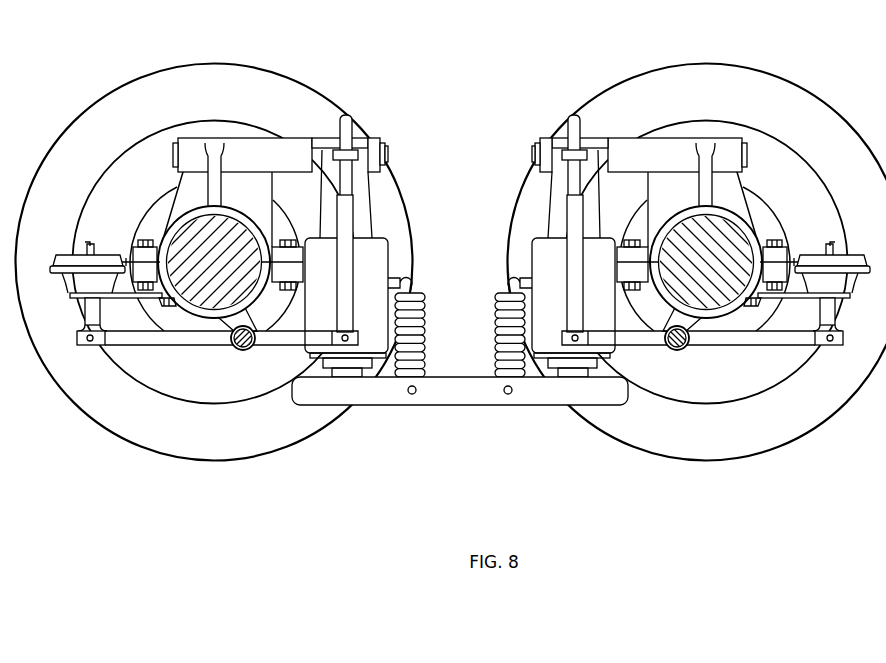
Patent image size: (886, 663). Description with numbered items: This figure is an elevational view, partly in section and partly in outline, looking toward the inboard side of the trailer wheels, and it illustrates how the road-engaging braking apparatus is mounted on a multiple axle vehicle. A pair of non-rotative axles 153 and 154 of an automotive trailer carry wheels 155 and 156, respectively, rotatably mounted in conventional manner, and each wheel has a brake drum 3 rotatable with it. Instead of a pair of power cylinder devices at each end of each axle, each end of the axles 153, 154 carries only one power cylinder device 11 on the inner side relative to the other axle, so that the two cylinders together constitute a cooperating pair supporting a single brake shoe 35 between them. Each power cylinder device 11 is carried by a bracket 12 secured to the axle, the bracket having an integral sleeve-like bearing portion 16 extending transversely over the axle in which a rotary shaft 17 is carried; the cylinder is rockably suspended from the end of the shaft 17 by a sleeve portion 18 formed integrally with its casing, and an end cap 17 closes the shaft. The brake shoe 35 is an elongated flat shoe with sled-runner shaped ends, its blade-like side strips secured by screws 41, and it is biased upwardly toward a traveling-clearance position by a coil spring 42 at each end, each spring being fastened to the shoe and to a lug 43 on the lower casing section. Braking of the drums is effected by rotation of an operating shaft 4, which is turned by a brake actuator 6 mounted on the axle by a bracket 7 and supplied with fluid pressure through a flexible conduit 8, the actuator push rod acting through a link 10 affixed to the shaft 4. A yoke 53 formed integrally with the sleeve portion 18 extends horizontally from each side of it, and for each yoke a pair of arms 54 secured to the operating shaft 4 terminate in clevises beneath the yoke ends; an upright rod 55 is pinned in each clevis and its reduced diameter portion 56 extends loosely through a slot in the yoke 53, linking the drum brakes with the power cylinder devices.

The brake drum 3 is at (164, 203).
The operating shaft 4 is at (243, 350).
The brake actuator 6 is at (60, 257).
The bracket 7 is at (104, 296).
The flexible conduit 8 is at (92, 252).
The link 10 is at (167, 346).
The power cylinder device 11 is at (382, 259).
The bracket 12 is at (272, 184).
The sleeve-like bearing portion 16 is at (220, 150).
The rotary shaft 17 is at (387, 153).
The sleeve portion 18 is at (326, 149).
The brake shoe 35 is at (460, 398).
The screw 41 is at (412, 395).
The coil spring 42 is at (425, 348).
The lug 43 is at (412, 282).
The yoke 53 is at (351, 158).
The arm 54 is at (298, 335).
The upright rod 55 is at (350, 208).
The reduced diameter portion 56 is at (350, 180).
The non-rotative axle 153 is at (186, 250).
The non-rotative axle 154 is at (740, 252).
The wheel 155 is at (213, 458).
The wheel 156 is at (708, 458).